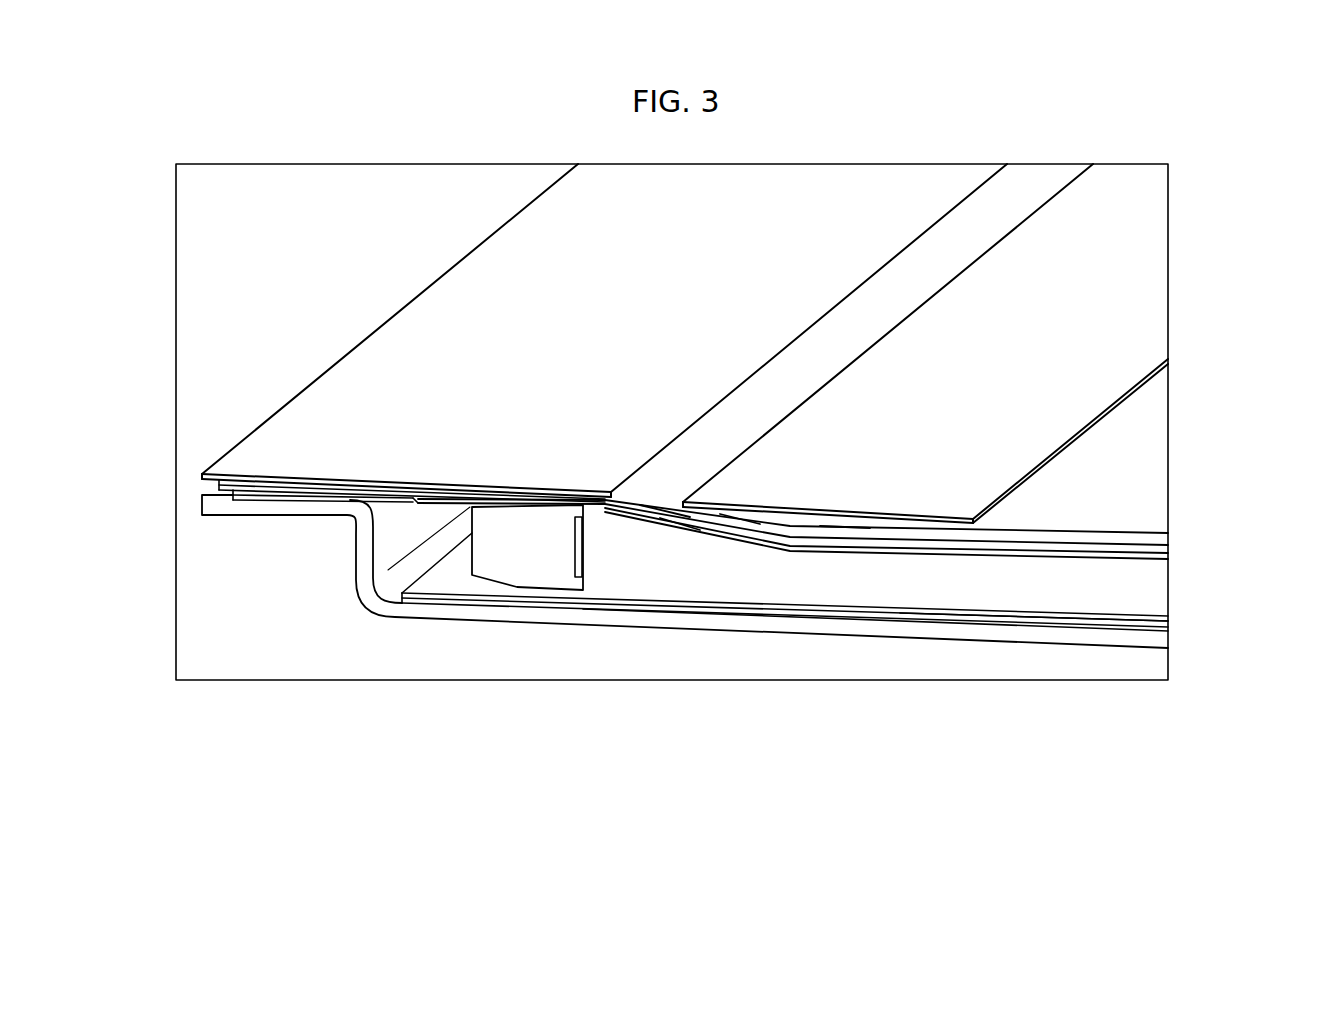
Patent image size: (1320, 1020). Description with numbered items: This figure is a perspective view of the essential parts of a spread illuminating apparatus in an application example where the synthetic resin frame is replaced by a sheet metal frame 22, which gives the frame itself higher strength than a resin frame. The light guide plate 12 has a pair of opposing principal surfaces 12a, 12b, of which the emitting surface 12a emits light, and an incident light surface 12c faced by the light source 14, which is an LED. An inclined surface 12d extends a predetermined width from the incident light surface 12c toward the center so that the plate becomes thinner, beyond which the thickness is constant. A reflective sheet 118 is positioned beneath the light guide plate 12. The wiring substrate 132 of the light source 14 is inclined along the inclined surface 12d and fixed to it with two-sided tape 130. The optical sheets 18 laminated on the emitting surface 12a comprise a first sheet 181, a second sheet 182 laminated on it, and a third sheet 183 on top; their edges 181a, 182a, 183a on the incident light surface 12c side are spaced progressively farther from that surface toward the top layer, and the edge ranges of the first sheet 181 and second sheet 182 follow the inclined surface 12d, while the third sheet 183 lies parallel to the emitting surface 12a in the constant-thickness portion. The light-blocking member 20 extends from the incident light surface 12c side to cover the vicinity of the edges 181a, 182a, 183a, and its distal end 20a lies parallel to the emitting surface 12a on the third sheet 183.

The light-blocking member 20 is at (435, 325).
The distal end of the light-blocking member 20a is at (1078, 437).
The wiring substrate 132 is at (262, 493).
The two-sided tape 130 is at (290, 500).
The optical sheets 18 is at (869, 541).
The first sheet 181 is at (936, 551).
The second sheet 182 is at (1168, 552).
The third sheet 183 is at (1166, 541).
The edge of the first sheet 181a is at (634, 506).
The edge of the second sheet 182a is at (737, 519).
The edge of the third sheet 183a is at (843, 529).
The light source 14 is at (502, 557).
The light guide plate 12 is at (827, 610).
The emitting surface 12a is at (1055, 552).
The principal surface 12b is at (973, 622).
The incident light surface 12c is at (575, 549).
The inclined surface 12d is at (679, 518).
The reflective sheet 118 is at (1168, 628).
The sheet metal frame 22 is at (758, 636).